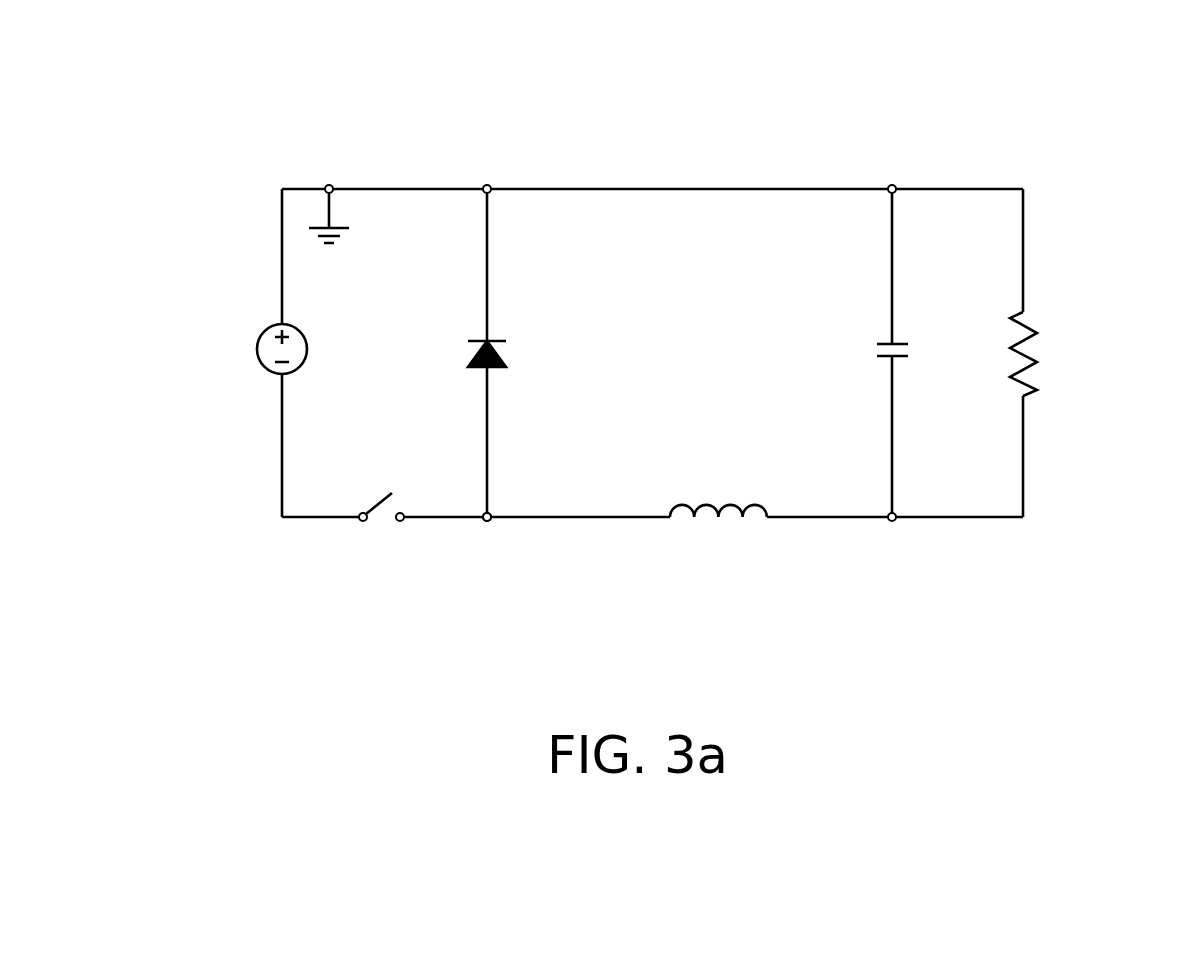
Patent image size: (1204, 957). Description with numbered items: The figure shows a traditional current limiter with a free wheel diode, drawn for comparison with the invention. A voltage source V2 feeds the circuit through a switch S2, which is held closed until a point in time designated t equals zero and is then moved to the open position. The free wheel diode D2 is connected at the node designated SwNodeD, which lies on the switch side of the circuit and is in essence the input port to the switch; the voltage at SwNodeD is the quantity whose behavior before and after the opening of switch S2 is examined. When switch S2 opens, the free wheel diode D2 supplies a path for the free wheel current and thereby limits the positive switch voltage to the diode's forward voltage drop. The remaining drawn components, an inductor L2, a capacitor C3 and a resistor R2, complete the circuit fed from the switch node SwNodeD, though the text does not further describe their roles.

The voltage source V2 is at (260, 325).
The switch S2 is at (362, 500).
The free wheel diode D2 is at (471, 316).
The inductor L2 is at (746, 533).
The capacitor C3 is at (913, 318).
The load resistor R2 is at (1046, 343).
The switch node position SwNodeD is at (494, 537).